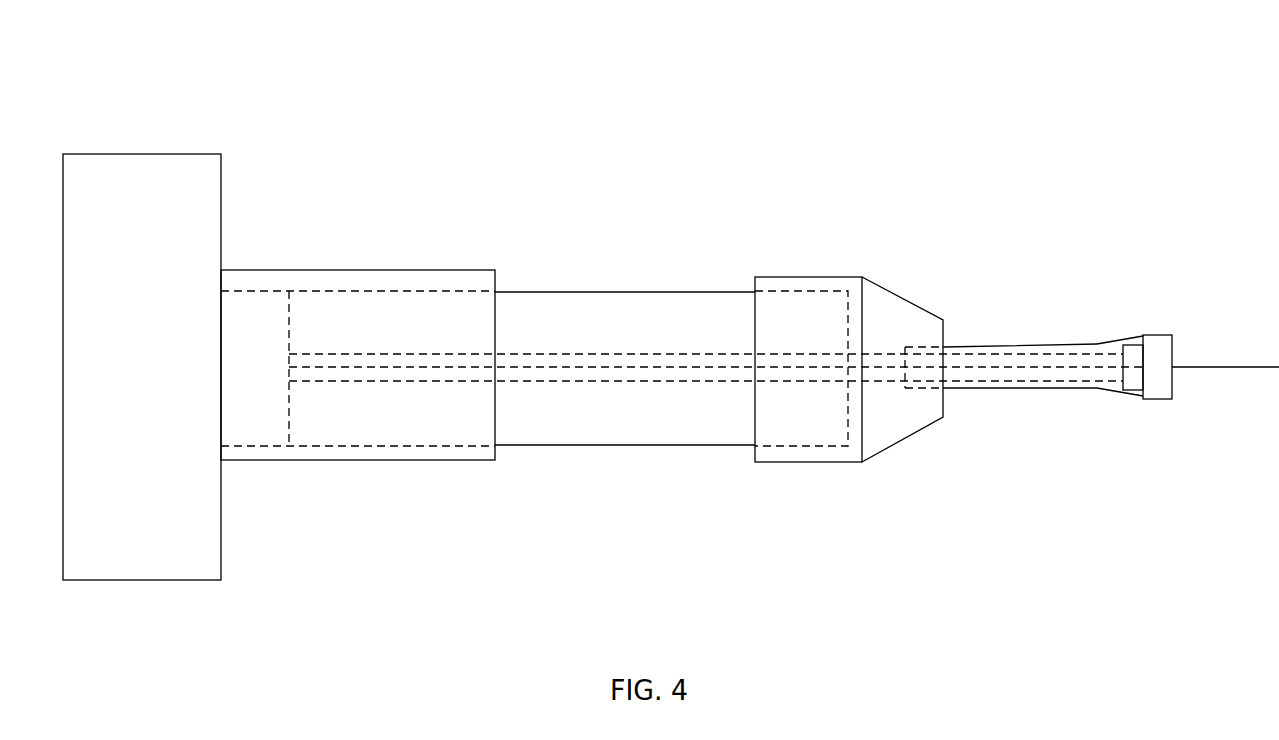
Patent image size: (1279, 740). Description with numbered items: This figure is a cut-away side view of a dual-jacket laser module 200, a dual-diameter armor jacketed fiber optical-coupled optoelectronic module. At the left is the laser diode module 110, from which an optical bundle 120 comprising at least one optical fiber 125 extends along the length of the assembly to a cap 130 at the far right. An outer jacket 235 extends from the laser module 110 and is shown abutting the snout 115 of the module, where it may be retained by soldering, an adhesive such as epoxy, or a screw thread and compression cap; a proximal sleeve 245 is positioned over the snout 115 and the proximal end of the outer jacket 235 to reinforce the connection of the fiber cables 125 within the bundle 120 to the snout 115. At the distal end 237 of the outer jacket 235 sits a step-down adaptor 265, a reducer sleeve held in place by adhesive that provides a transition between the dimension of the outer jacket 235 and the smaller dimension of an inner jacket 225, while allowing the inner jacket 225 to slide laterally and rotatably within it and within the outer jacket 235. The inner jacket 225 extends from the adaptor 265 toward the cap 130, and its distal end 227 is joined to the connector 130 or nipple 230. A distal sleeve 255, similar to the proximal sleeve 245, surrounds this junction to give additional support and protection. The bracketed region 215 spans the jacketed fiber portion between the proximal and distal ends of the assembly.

The dual-jacket laser module 200 is at (1062, 72).
The laser diode module 110 is at (165, 580).
The snout 115 is at (272, 446).
The proximal sleeve 245 is at (365, 270).
The outer jacket 235 is at (665, 292).
The optical bundle 120 is at (663, 381).
The optical fiber 125 is at (545, 368).
The step-down adaptor 265 is at (873, 457).
The distal end of outer jacket 237 is at (848, 403).
The fiber assembly 215 is at (1070, 222).
The inner jacket 225 is at (1017, 345).
The distal end of inner jacket 227 is at (1120, 360).
The distal sleeve 255 is at (1096, 390).
The nipple 230 is at (1130, 383).
The cap 130 is at (1163, 335).